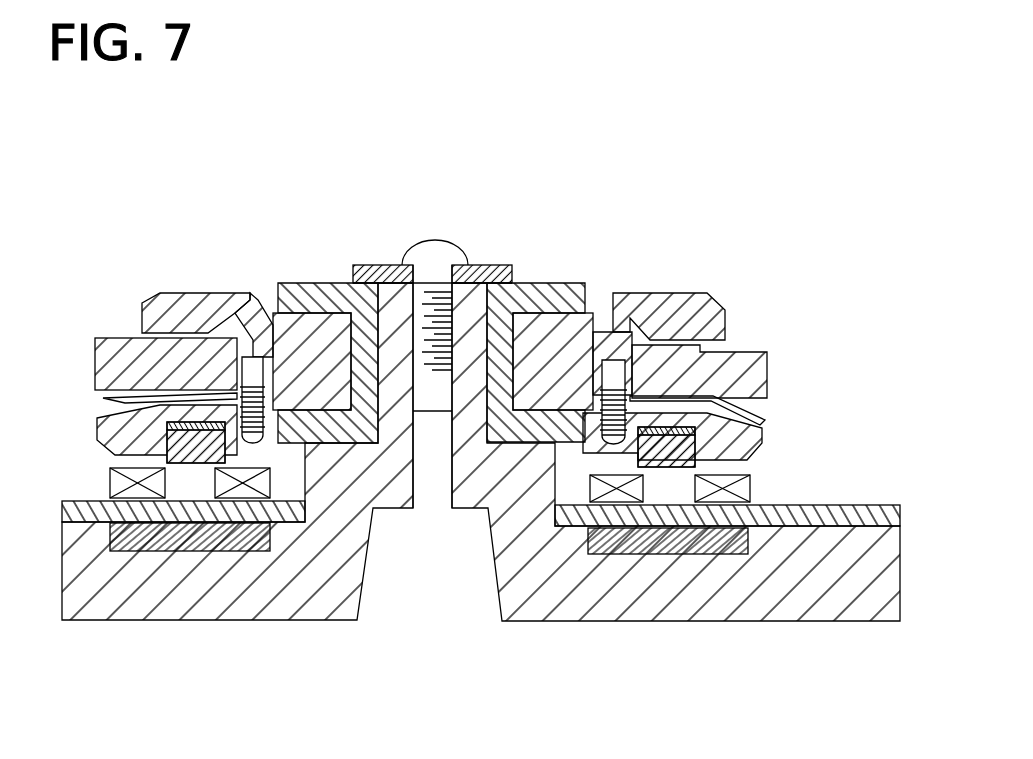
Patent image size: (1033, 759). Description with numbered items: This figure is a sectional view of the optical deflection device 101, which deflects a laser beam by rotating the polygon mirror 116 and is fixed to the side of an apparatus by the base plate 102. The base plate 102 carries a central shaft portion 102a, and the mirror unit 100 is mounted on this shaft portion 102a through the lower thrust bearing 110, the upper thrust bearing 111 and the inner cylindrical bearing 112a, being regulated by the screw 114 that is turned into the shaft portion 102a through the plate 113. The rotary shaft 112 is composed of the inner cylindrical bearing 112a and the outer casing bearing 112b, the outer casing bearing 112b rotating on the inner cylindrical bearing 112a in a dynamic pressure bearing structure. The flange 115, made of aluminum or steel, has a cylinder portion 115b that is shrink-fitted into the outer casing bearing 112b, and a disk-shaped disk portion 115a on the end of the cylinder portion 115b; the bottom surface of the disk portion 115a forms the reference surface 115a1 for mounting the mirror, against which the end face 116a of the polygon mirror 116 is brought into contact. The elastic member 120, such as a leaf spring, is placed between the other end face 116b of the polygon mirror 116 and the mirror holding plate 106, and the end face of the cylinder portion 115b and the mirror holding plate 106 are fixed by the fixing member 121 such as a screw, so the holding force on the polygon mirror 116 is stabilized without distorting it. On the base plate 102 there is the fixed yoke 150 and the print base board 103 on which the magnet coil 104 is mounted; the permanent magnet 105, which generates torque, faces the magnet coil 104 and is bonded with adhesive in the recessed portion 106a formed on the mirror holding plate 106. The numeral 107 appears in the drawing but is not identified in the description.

The mirror unit 100 is at (690, 252).
The optical deflection device 101 is at (566, 156).
The base plate 102 is at (548, 598).
The shaft portion 102a is at (493, 268).
The print base board 103 is at (865, 515).
The magnet coil 104 is at (118, 486).
The permanent magnet 105 is at (168, 460).
The mirror holding plate 106 is at (98, 423).
The recessed portion 106a is at (680, 435).
The bobbin 107 is at (190, 511).
The lower thrust bearing 110 is at (497, 432).
The upper thrust bearing 111 is at (322, 298).
The rotary shaft 112 is at (557, 337).
The inner cylindrical bearing 112a is at (372, 300).
The outer casing bearing 112b is at (270, 315).
The plate 113 is at (393, 266).
The screw 114 is at (440, 247).
The flange 115 is at (130, 296).
The disk portion 115a is at (190, 300).
The reference surface 115a1 is at (710, 352).
The cylinder portion 115b is at (243, 312).
The polygon mirror 116 is at (150, 352).
The end face 116a is at (660, 285).
The other end face 116b is at (750, 428).
The elastic member 120 is at (757, 410).
The fixing member 121 is at (255, 442).
The fixed yoke 150 is at (620, 547).